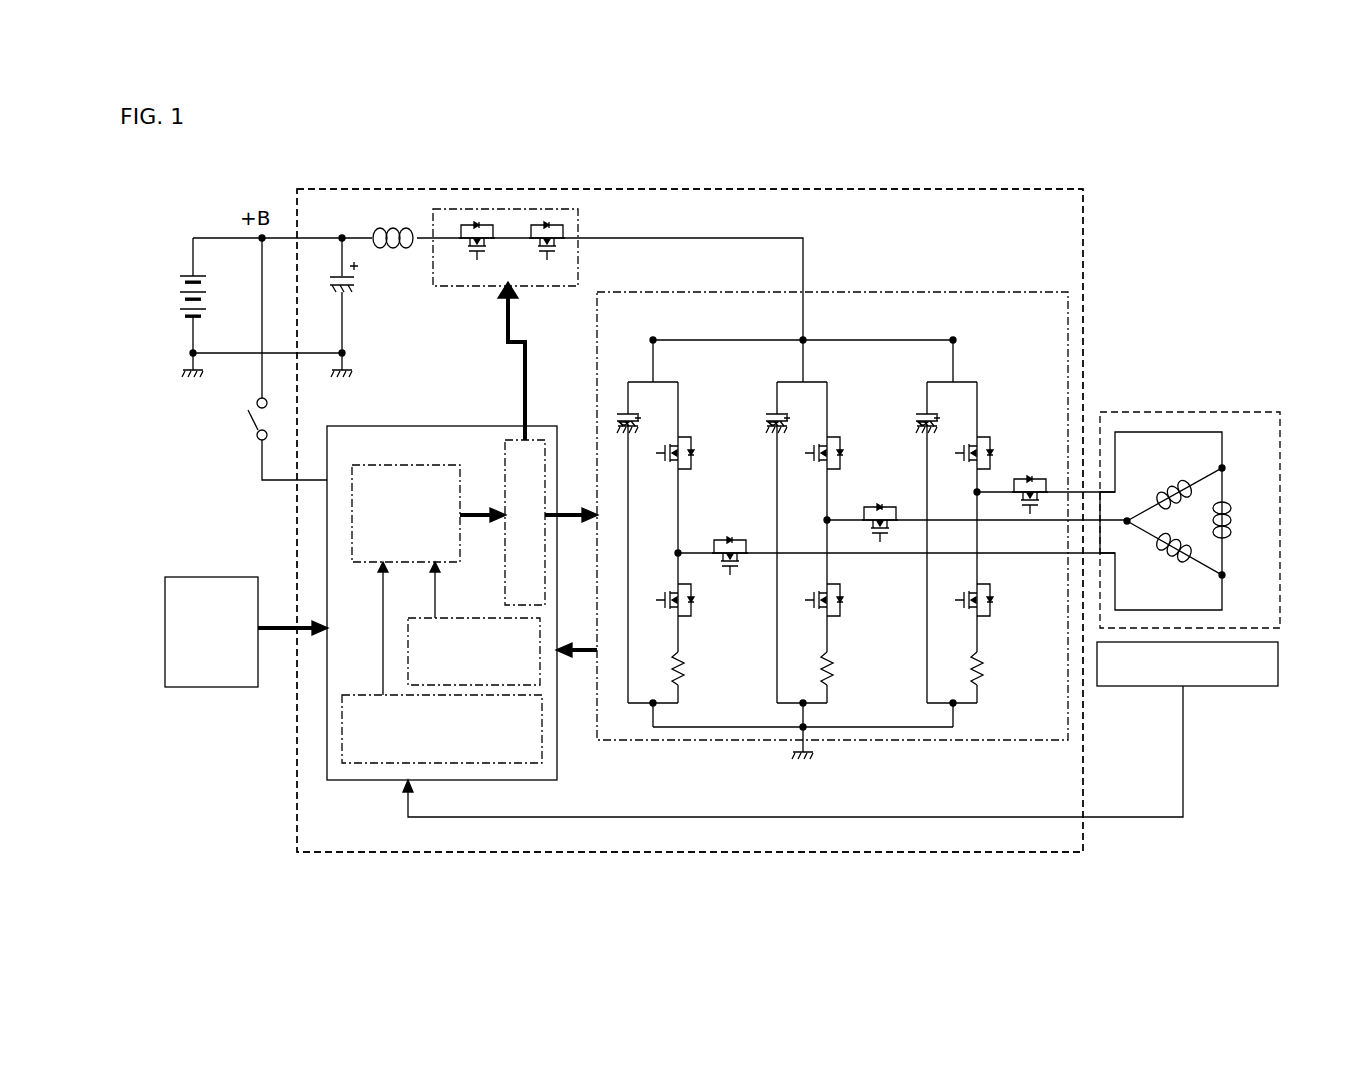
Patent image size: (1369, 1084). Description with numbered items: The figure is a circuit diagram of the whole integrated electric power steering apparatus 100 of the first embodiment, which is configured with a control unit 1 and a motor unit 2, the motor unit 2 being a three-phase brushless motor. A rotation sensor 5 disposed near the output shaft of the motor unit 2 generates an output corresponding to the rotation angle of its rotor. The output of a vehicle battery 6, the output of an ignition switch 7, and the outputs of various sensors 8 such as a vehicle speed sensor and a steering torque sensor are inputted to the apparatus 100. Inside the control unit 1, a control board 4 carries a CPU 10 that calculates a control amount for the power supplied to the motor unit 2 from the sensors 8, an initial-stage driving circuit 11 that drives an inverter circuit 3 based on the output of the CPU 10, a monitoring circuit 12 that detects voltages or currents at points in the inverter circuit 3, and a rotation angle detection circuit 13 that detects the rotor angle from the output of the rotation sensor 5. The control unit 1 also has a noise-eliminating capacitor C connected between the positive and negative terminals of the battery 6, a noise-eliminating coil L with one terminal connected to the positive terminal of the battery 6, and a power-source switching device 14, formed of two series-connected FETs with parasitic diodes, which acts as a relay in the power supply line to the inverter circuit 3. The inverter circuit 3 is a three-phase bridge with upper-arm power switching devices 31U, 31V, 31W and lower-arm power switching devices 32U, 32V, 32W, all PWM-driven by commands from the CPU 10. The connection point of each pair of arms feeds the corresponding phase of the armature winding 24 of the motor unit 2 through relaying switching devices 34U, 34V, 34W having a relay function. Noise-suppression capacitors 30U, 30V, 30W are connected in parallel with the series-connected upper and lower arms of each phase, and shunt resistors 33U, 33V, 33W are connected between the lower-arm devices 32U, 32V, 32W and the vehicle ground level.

The control unit 1 is at (1083, 218).
The integrated electric power steering apparatus 100 is at (740, 163).
The motor unit 2 is at (1190, 465).
The armature winding 24 is at (1179, 428).
The inverter circuit 3 is at (870, 742).
The control board 4 is at (326, 714).
The rotation sensor 5 is at (1218, 688).
The battery 6 is at (178, 305).
The ignition switch 7 is at (246, 430).
The sensors 8 is at (185, 688).
The CPU 10 is at (352, 505).
The initial-stage driving circuit 11 is at (507, 460).
The monitoring circuit 12 is at (545, 665).
The rotation angle detection circuit 13 is at (368, 765).
The power-source switching device 14 is at (508, 209).
The noise-suppression capacitor 30U is at (620, 412).
The noise-suppression capacitor 30V is at (773, 412).
The noise-suppression capacitor 30W is at (923, 412).
The power switching device 31U is at (682, 440).
The power switching device 31V is at (832, 447).
The power switching device 31W is at (982, 441).
The power switching device 32U is at (690, 605).
The power switching device 32V is at (840, 605).
The power switching device 32W is at (990, 608).
The shunt resistor 33U is at (686, 666).
The shunt resistor 33V is at (835, 666).
The shunt resistor 33W is at (985, 672).
The relaying switching device 34U is at (732, 540).
The relaying switching device 34V is at (882, 508).
The relaying switching device 34W is at (1031, 480).
The coil L is at (395, 226).
The capacitor C is at (350, 290).